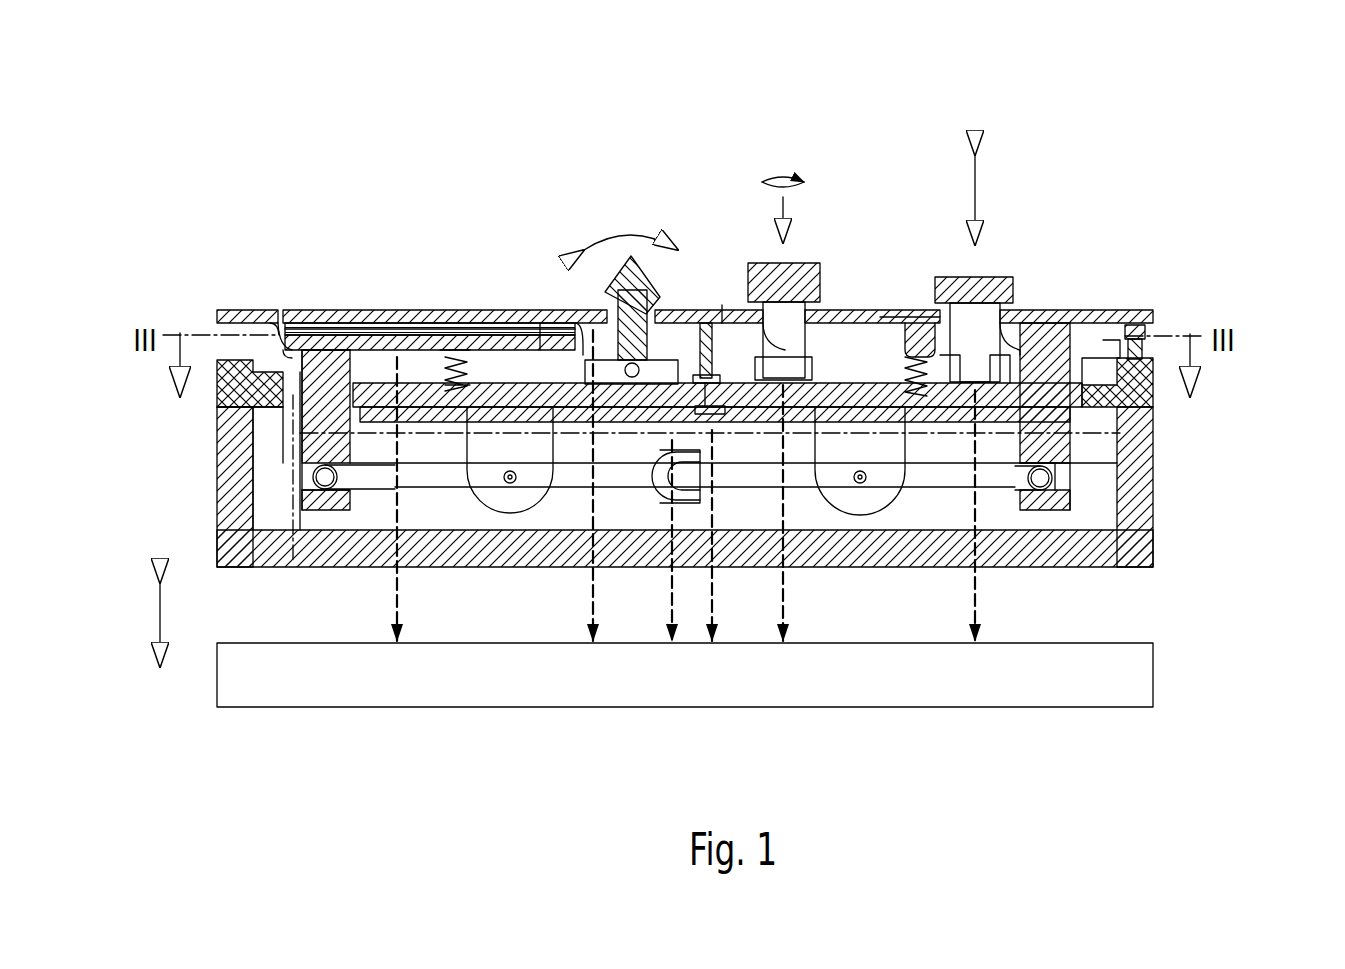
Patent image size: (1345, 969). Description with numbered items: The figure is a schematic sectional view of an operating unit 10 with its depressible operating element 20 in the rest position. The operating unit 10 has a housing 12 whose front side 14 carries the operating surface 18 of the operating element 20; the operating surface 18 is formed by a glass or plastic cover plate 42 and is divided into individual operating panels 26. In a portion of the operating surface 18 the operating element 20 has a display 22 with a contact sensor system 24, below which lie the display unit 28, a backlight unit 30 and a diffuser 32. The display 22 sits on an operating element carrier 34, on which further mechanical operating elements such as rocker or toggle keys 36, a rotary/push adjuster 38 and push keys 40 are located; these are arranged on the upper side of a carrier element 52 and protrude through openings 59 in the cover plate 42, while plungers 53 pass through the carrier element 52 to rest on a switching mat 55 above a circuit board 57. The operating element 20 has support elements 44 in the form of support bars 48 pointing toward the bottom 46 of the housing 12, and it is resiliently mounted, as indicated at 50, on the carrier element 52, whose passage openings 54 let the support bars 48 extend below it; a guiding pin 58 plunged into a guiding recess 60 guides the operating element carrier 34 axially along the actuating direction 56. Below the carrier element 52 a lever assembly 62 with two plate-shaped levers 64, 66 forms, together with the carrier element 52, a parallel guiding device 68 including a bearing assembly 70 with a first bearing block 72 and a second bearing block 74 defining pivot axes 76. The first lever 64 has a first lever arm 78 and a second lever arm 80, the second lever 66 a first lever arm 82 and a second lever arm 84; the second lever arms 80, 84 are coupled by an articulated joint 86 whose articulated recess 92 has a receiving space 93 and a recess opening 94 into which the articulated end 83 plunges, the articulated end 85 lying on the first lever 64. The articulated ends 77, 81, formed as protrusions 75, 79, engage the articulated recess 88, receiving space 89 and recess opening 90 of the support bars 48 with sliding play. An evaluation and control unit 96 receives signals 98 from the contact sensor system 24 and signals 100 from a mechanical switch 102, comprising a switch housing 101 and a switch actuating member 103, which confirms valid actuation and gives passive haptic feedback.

The operating unit 10 is at (1218, 150).
The housing 12 is at (1153, 462).
The front side 14 is at (875, 255).
The operating surface 18 is at (880, 318).
The operating element 20 is at (310, 295).
The display 22 is at (475, 285).
The contact sensor system 24 is at (280, 318).
The operating panels 26 is at (322, 325).
The display unit 28 is at (288, 350).
The backlight unit 30 is at (258, 430).
The diffuser 32 is at (245, 400).
The operating element carrier 34 is at (1112, 318).
The rocker or toggle keys 36 is at (622, 268).
The rotary/push adjuster 38 is at (790, 262).
The push keys 40 is at (1048, 330).
The cover plate 42 is at (1128, 372).
The support elements 44 is at (337, 520).
The bottom 46 is at (452, 550).
The support bars 48 is at (288, 560).
The resilient mounting 50 is at (432, 330).
The carrier element 52 is at (990, 340).
The plungers 53 is at (562, 383).
The passage openings 54 is at (298, 468).
The switching mat 55 is at (1090, 388).
The actuating direction 56 is at (150, 622).
The circuit board 57 is at (1105, 405).
The guiding pin 58 is at (1142, 352).
The openings 59 is at (632, 268).
The guiding recess 60 is at (1145, 330).
The lever assembly 62 is at (703, 500).
The first lever 64 is at (628, 498).
The second lever 66 is at (808, 498).
The parallel guiding device 68 is at (220, 600).
The bearing assembly 70 is at (922, 500).
The first bearing block 72 is at (560, 540).
The second bearing block 74 is at (905, 470).
The protrusion 75 is at (288, 497).
The pivot axes 76 is at (510, 480).
The articulated end 77 is at (383, 560).
The first lever arm 78 is at (432, 580).
The protrusion 79 is at (1150, 620).
The second lever arm 80 is at (660, 495).
The articulated end 81 is at (1022, 500).
The first lever arm 82 is at (1000, 490).
The articulated end 83 is at (690, 500).
The second lever arm 84 is at (745, 470).
The articulated end 85 is at (708, 500).
The articulated joint 86 is at (585, 350).
The articulated recess 88 is at (300, 488).
The receiving space 89 is at (280, 580).
The recess opening 90 is at (330, 505).
The articulated recess 92 is at (720, 500).
The receiving space 93 is at (540, 322).
The recess opening 94 is at (728, 305).
The evaluation and control unit 96 is at (1145, 675).
The signals 98 is at (400, 520).
The signals 100 is at (528, 550).
The switch housing 101 is at (714, 430).
The mechanical switch 102 is at (718, 422).
The switch actuating member 103 is at (716, 400).